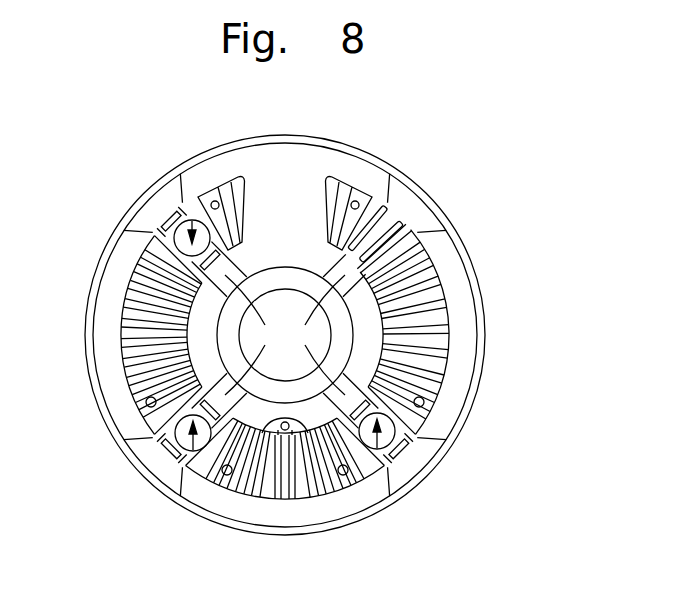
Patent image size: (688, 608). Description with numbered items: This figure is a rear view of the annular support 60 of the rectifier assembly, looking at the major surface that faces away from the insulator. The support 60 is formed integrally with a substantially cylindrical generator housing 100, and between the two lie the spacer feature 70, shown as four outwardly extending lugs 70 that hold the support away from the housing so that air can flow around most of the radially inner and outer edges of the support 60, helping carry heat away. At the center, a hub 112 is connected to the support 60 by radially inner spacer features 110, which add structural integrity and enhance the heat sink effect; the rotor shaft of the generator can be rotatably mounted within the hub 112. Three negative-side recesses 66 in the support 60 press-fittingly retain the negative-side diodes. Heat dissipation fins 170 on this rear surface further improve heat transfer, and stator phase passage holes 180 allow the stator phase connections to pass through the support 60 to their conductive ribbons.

The annular support 60 is at (205, 196).
The negative-side recesses 66 is at (191, 220).
The spacer feature 70 is at (158, 207).
The generator housing 100 is at (487, 343).
The radially inner spacer features 110 is at (285, 335).
The hub 112 is at (285, 270).
The heat dissipation fins 170 is at (270, 483).
The stator phase passage holes 180 is at (147, 406).